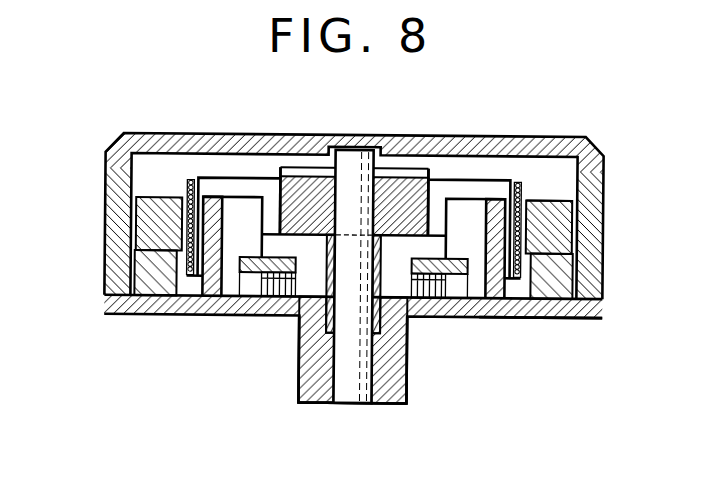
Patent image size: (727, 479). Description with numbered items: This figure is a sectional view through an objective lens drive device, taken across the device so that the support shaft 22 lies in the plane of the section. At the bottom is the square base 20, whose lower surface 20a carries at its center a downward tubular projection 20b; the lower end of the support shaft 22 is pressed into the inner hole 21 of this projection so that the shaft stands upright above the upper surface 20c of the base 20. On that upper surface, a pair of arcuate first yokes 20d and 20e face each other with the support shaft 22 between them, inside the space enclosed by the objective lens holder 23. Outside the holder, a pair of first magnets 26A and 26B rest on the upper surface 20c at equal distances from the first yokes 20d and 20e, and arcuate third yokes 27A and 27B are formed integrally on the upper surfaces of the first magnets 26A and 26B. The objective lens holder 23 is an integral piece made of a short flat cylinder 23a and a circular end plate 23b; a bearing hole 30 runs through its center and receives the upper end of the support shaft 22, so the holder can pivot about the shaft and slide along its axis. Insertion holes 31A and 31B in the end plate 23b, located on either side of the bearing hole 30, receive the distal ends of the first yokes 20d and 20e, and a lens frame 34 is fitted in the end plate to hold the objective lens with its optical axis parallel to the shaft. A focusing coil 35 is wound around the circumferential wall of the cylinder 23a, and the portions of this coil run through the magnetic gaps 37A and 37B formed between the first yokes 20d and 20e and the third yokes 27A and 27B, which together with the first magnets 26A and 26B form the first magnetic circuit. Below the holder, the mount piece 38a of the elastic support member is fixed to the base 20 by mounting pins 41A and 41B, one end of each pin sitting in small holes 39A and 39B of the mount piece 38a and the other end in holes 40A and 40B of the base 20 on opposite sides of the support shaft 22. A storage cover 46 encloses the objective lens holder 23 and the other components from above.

The base 20 is at (589, 320).
The lower surface 20a is at (533, 300).
The tubular projection 20b is at (410, 384).
The upper surface 20c is at (522, 300).
The first yoke 20d is at (212, 202).
The first yoke 20e is at (492, 212).
The inner hole 21 is at (407, 384).
The support shaft 22 is at (327, 382).
The objective lens holder 23 is at (448, 172).
The flat cylinder 23a is at (167, 296).
The end plate 23b is at (313, 185).
The first magnet 26A is at (136, 272).
The first magnet 26B is at (562, 277).
The third yoke 27A is at (138, 220).
The third yoke 27B is at (558, 222).
The bearing hole 30 is at (312, 368).
The insertion hole 31A is at (275, 187).
The insertion hole 31B is at (510, 184).
The lens frame 34 is at (397, 172).
The focusing coil 35 is at (532, 193).
The magnetic gap 37A is at (180, 186).
The magnetic gap 37B is at (523, 190).
The mount piece 38a is at (230, 296).
The small hole 39A is at (262, 300).
The small hole 39B is at (415, 298).
The hole 40A is at (262, 298).
The hole 40B is at (452, 300).
The mounting pin 41A is at (292, 300).
The mounting pin 41B is at (385, 322).
The storage cover 46 is at (114, 150).